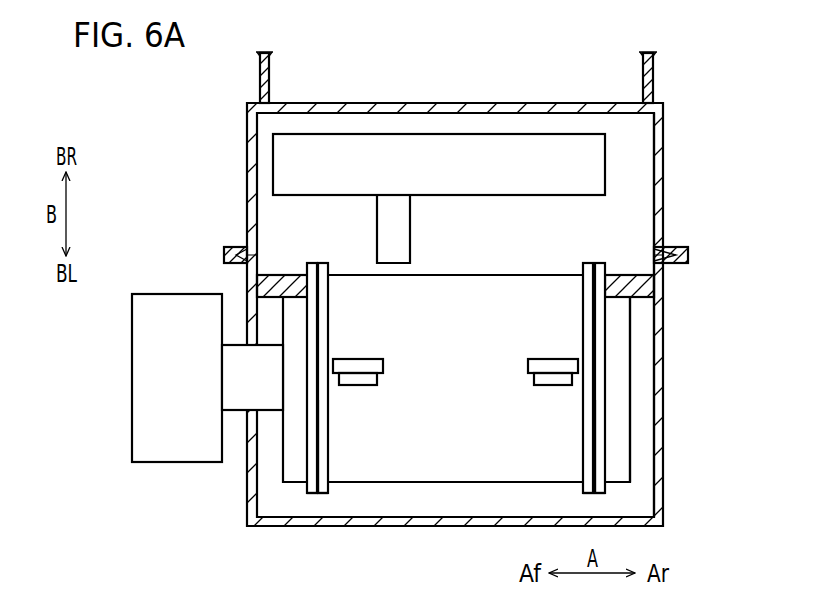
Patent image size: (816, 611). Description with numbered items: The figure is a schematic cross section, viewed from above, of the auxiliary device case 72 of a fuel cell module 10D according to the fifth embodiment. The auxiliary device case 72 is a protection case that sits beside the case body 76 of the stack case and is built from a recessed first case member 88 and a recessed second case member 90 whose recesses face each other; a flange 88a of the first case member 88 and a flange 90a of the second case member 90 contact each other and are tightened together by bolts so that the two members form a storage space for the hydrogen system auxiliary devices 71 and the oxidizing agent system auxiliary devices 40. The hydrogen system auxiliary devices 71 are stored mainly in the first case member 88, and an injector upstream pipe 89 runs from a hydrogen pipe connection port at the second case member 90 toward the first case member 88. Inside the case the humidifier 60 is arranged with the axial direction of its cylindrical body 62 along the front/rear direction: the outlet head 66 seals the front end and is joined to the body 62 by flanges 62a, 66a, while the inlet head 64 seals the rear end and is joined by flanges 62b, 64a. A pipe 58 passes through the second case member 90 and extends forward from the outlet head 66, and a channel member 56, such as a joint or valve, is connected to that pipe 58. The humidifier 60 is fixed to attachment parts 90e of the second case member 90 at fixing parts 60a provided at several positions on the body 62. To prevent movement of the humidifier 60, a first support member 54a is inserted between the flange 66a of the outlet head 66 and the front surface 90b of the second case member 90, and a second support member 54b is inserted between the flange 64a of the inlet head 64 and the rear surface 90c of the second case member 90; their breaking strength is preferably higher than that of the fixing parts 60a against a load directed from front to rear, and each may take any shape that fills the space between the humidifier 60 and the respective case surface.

The fuel cell module 10D is at (157, 107).
The oxidizing agent system auxiliary devices 40 is at (638, 466).
The first support member 54a is at (275, 285).
The second support member 54b is at (638, 284).
The channel member 56 is at (153, 322).
The pipe 58 is at (238, 373).
The humidifier 60 is at (437, 487).
The fixing parts 60a is at (345, 385).
The body 62 is at (502, 293).
The flange 62a is at (325, 448).
The flange 62b is at (590, 447).
The inlet head 64 is at (625, 346).
The flange 64a is at (600, 445).
The outlet head 66 is at (296, 470).
The flange 66a is at (311, 494).
The hydrogen system auxiliary devices 71 is at (487, 132).
The auxiliary device case 72 is at (670, 105).
The case body 76 is at (258, 75).
The first case member 88 is at (660, 141).
The flange 88a is at (243, 250).
The injector upstream pipe 89 is at (397, 233).
The second case member 90 is at (660, 403).
The flange 90a is at (238, 262).
The front surface 90b is at (253, 494).
The rear surface 90c is at (660, 371).
The attachment parts 90e is at (362, 366).